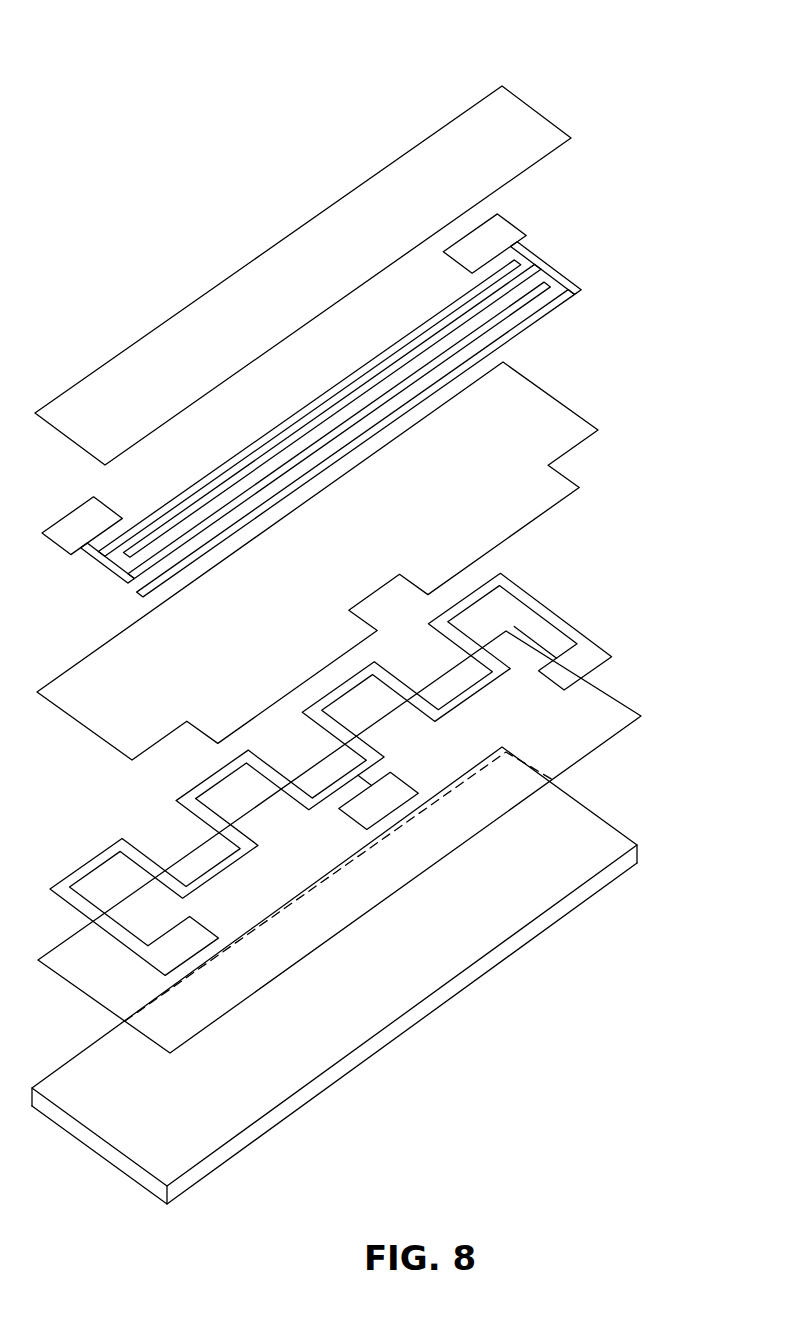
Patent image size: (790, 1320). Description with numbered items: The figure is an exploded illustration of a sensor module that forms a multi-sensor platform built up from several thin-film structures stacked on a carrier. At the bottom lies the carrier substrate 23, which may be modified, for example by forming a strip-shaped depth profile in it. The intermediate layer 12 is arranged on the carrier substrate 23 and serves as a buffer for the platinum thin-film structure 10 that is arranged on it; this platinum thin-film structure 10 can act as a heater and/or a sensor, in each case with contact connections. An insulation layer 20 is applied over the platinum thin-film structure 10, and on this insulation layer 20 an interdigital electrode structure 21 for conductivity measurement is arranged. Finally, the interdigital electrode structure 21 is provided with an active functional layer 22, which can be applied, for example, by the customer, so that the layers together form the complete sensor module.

The active functional layer 22 is at (532, 127).
The interdigital electrode structure 21 is at (553, 270).
The insulation layer 20 is at (560, 420).
The platinum thin-film structure 10 is at (562, 615).
The intermediate layer 12 is at (615, 715).
The carrier substrate 23 is at (600, 828).